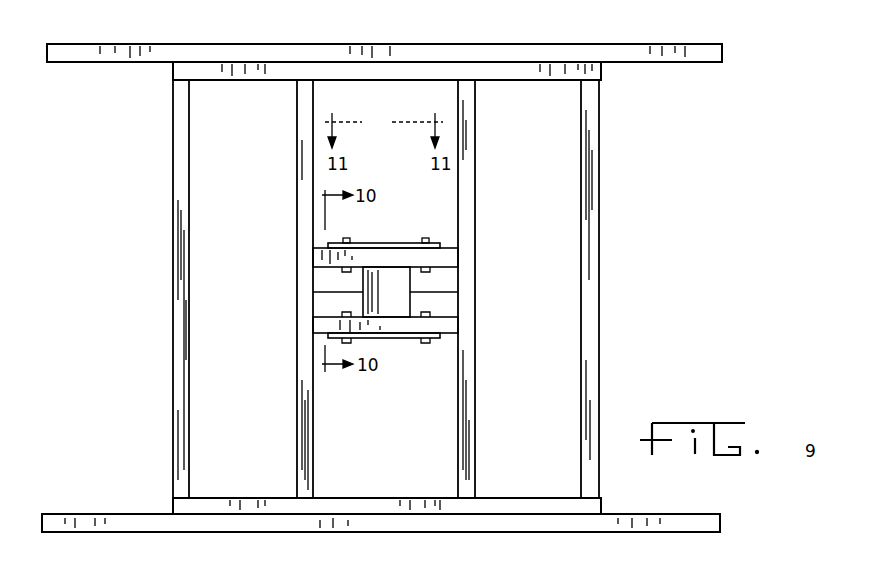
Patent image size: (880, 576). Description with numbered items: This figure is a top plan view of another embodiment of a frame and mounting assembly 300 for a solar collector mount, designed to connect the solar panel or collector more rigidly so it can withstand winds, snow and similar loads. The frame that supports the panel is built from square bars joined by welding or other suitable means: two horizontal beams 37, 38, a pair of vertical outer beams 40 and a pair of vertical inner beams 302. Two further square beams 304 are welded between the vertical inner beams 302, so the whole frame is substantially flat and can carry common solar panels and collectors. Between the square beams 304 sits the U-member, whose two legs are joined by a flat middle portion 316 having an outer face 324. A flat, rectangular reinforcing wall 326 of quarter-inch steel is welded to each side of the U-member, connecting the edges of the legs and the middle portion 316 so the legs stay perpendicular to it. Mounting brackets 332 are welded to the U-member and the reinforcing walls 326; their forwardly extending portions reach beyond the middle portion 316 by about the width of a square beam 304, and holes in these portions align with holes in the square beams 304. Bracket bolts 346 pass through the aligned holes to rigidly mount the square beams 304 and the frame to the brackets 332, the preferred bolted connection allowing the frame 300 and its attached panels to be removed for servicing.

The horizontal beam 37 is at (508, 72).
The horizontal beam 38 is at (392, 56).
The vertical outer beam 40 is at (180, 297).
The vertical inner beam 302 is at (470, 165).
The mounting assembly 300 is at (616, 180).
The square beam 304 is at (410, 252).
The mounting bracket 332 is at (390, 243).
The bracket bolt 346 is at (343, 240).
The outer face 324 is at (417, 278).
The reinforcing wall 326 is at (363, 292).
The middle portion 316 is at (388, 306).